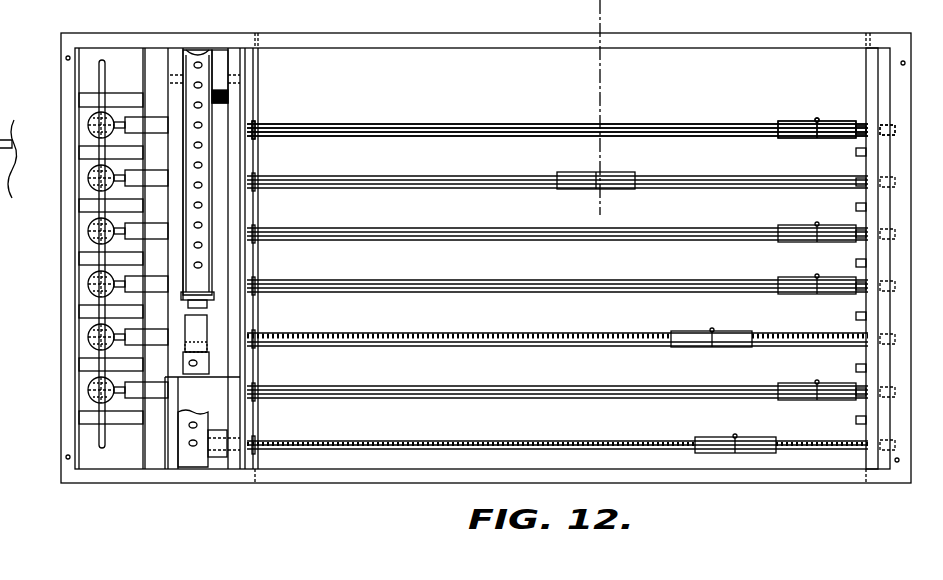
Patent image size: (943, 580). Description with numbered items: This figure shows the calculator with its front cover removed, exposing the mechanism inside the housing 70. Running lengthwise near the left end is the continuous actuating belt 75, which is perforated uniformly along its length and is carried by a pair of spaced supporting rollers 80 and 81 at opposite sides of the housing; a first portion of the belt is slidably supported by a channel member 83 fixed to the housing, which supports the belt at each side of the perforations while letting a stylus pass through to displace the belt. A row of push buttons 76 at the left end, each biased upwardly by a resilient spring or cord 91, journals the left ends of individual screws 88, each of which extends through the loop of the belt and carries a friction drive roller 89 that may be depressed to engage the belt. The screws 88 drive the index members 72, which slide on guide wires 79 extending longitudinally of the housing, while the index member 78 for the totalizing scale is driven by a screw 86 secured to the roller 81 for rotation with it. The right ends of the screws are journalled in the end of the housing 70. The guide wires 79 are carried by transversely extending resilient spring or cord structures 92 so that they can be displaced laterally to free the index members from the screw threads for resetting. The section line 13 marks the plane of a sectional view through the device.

The section line 13- 13 is at (622, 22).
The housing 70 is at (886, 78).
The index members 72 is at (736, 338).
The actuating belt 75 is at (198, 60).
The push button 76 is at (88, 340).
The index member 78 is at (750, 446).
The guide wire 79 is at (665, 440).
The supporting roller 80 is at (220, 58).
The supporting roller 81 is at (216, 458).
The channel member 83 is at (176, 292).
The screw 86 is at (450, 440).
The screws 88 is at (596, 344).
The friction drive roller 89 is at (200, 325).
The resilient spring or cord 91 is at (103, 94).
The resilient spring or cord structures 92 is at (258, 96).